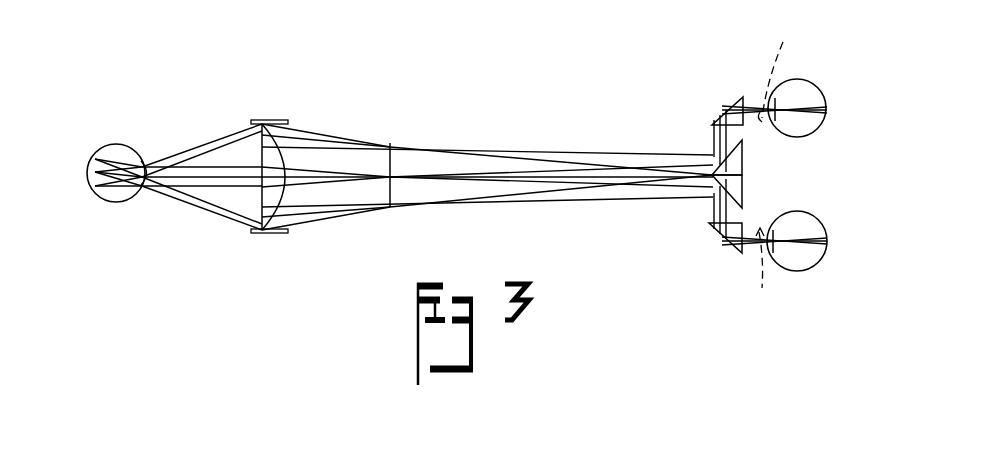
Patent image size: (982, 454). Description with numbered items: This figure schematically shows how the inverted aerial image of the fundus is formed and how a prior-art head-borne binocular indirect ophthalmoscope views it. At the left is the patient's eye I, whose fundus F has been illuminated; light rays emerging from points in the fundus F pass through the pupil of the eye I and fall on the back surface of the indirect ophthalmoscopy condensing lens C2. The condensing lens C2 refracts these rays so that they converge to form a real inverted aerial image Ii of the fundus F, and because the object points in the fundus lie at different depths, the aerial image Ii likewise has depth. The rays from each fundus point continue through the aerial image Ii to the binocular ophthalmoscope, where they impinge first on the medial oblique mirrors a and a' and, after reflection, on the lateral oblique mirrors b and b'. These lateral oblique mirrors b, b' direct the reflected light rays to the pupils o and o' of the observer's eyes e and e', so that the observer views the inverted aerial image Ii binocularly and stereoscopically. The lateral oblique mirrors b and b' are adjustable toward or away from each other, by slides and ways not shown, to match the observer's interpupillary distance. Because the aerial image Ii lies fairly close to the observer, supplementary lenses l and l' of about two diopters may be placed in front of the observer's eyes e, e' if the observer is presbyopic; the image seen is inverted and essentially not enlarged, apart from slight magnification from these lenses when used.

The fundus F is at (91, 172).
The eye I is at (103, 203).
The indirect ophthalmoscopy condensing lens C2 is at (254, 206).
The aerial image Ii is at (392, 190).
The medial oblique mirror a is at (747, 157).
The medial oblique mirror a' is at (752, 192).
The lateral oblique mirror b is at (727, 81).
The lateral oblique mirror b' is at (725, 265).
The supplementary lens l is at (771, 79).
The supplementary lens l' is at (764, 267).
The pupil o is at (796, 80).
The pupil o' is at (788, 269).
The observer's eye e is at (811, 87).
The observer's eye e' is at (814, 226).